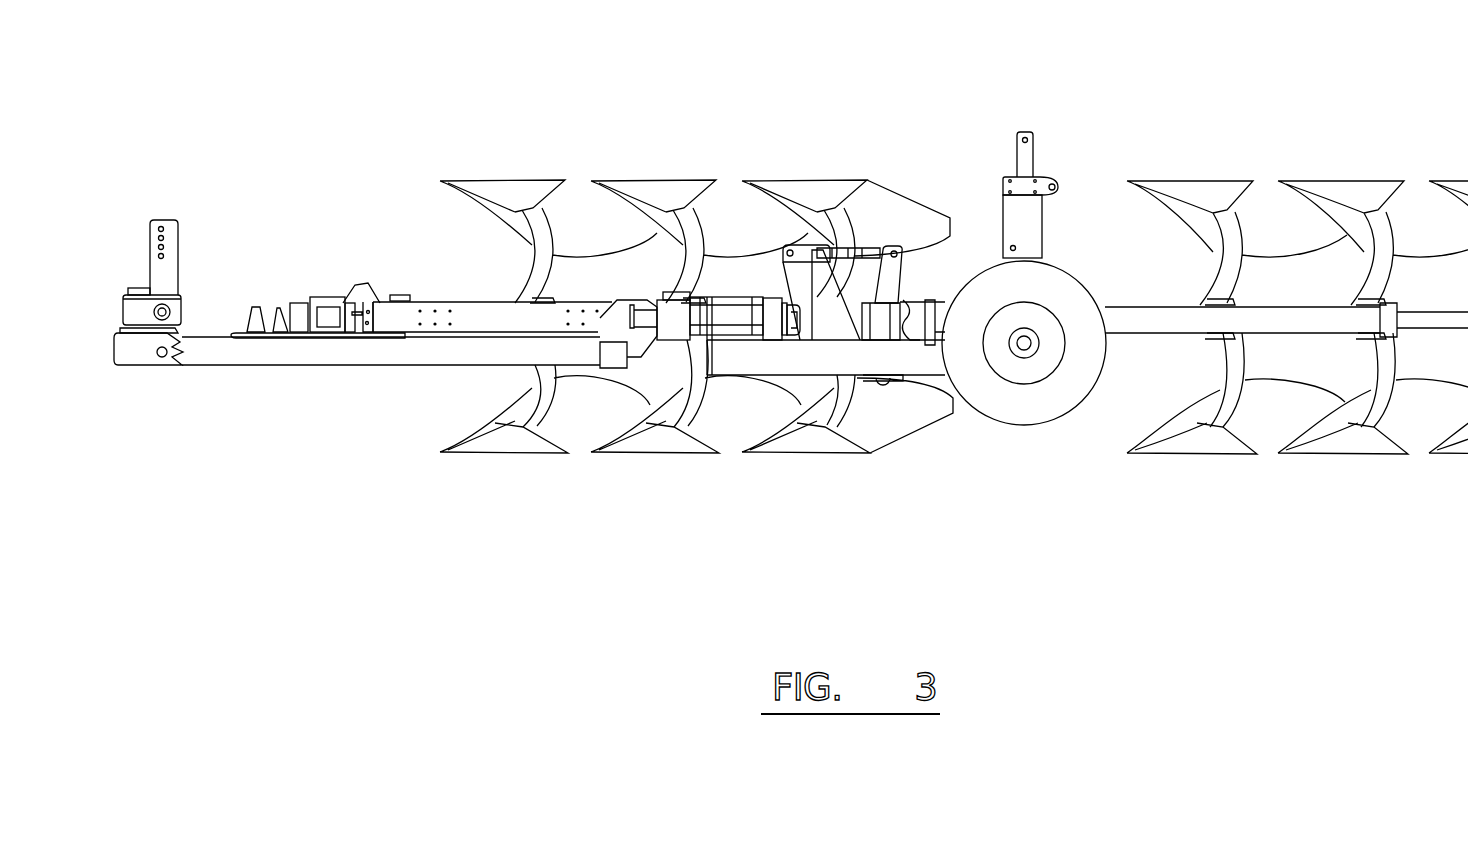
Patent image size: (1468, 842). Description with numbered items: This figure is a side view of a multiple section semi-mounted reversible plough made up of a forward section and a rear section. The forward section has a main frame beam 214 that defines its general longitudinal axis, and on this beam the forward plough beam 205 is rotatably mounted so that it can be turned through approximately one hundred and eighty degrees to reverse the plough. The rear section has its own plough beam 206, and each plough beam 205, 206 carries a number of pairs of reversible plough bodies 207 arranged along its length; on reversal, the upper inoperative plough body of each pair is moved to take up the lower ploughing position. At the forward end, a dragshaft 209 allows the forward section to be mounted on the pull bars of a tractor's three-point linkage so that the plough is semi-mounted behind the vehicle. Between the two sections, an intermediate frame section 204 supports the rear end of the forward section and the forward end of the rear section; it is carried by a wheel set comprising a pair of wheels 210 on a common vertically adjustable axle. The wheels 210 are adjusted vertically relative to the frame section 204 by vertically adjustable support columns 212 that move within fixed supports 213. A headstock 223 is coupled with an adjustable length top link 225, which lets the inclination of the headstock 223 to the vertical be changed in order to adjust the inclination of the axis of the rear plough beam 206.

The intermediate frame section 204 is at (775, 355).
The plough beam 205 is at (487, 315).
The plough beam 206 is at (1300, 320).
The reversible plough bodies 207 is at (578, 210).
The dragshaft 209 is at (172, 306).
The wheels 210 is at (1033, 400).
The vertically adjustable support columns 212 is at (1027, 158).
The fixed supports 213 is at (1030, 233).
The main frame beam 214 is at (375, 352).
The headstock 223 is at (895, 297).
The adjustable length top link 225 is at (871, 248).